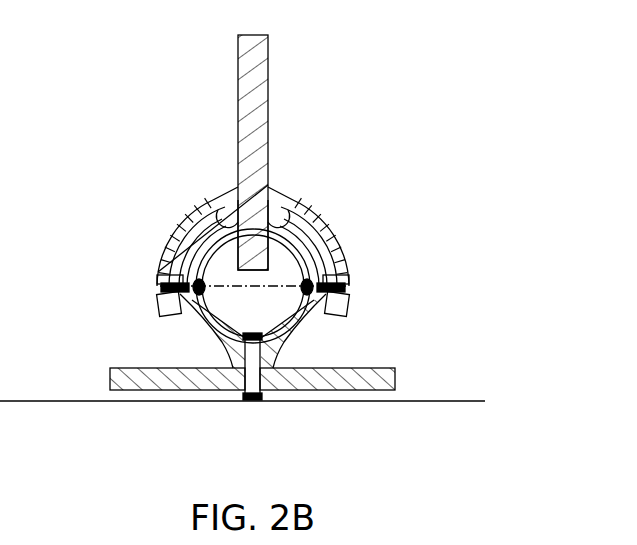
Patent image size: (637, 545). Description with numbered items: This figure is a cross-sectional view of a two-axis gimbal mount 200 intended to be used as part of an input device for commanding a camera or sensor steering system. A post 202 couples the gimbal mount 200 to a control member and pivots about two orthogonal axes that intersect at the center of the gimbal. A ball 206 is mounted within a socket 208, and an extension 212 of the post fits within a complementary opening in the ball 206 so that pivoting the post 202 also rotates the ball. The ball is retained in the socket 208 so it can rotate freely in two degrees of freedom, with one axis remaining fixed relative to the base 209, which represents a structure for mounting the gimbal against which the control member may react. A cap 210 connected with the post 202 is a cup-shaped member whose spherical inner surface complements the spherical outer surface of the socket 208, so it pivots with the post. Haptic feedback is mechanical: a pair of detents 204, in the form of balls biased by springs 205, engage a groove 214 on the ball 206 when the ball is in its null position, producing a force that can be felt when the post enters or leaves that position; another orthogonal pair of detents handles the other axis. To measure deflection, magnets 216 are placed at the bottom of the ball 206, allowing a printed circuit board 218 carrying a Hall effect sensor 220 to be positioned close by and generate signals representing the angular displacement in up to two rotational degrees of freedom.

The two-axis gimbal mount 200 is at (380, 130).
The post 202 is at (270, 94).
The detents 204 is at (164, 252).
The springs 205 is at (158, 292).
The ball 206 is at (191, 318).
The socket 208 is at (300, 346).
The base 209 is at (396, 381).
The cap 210 is at (302, 215).
The extension 212 is at (220, 212).
The groove 214 is at (260, 322).
The magnets 216 is at (216, 352).
The printed circuit board 218 is at (418, 403).
The Hall effect sensor 220 is at (257, 403).